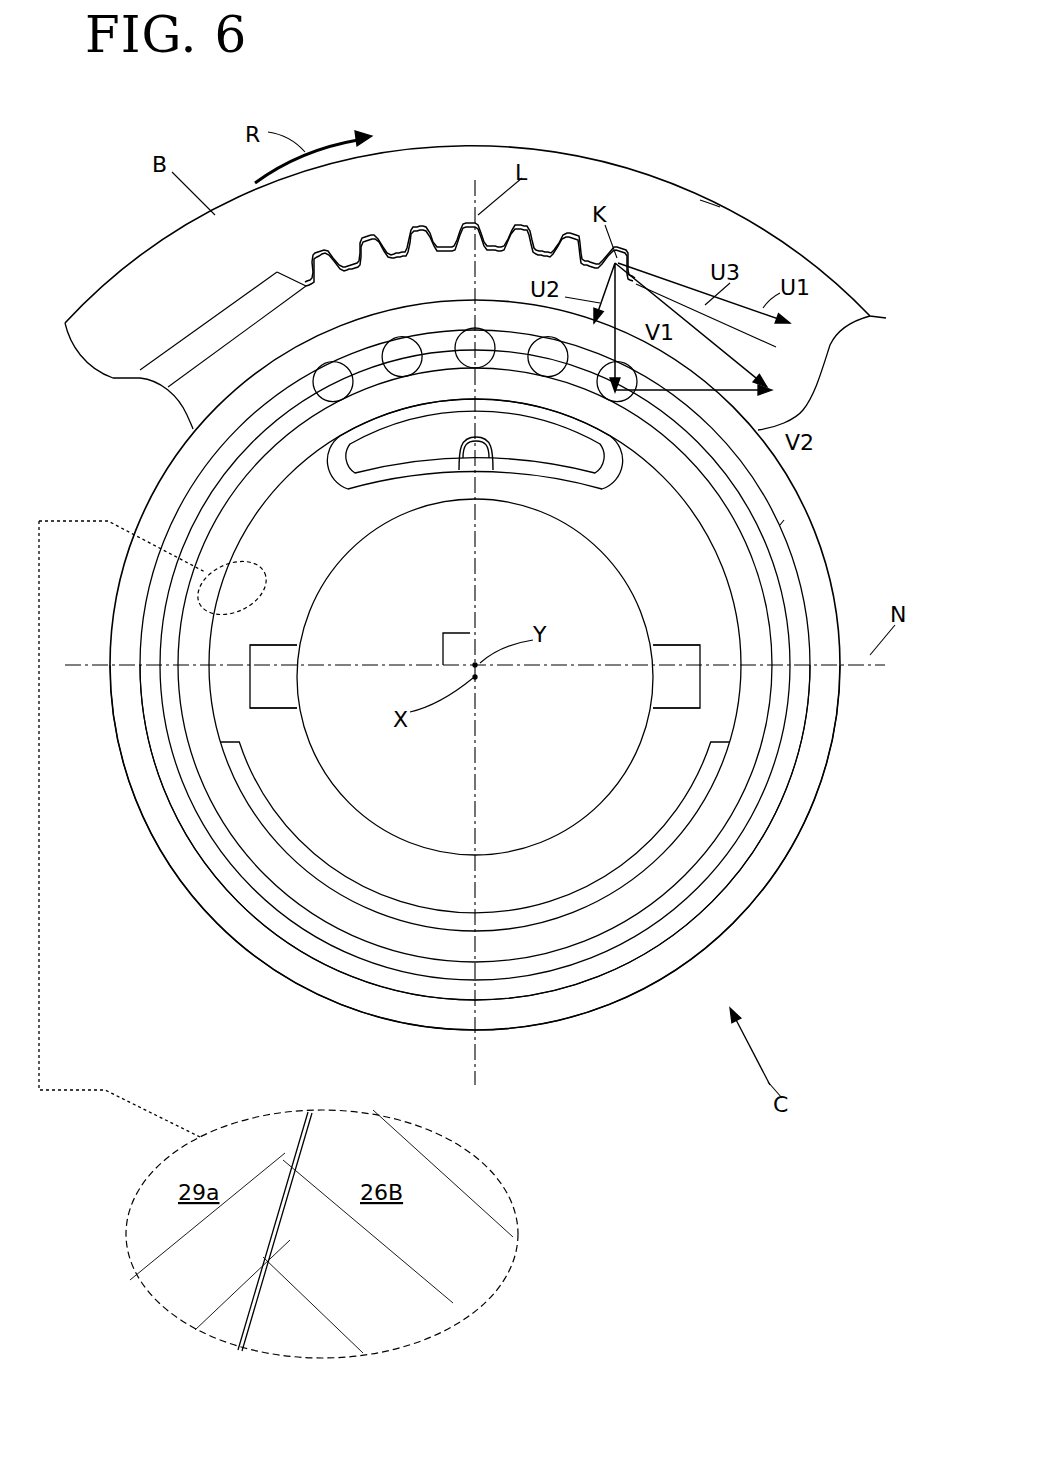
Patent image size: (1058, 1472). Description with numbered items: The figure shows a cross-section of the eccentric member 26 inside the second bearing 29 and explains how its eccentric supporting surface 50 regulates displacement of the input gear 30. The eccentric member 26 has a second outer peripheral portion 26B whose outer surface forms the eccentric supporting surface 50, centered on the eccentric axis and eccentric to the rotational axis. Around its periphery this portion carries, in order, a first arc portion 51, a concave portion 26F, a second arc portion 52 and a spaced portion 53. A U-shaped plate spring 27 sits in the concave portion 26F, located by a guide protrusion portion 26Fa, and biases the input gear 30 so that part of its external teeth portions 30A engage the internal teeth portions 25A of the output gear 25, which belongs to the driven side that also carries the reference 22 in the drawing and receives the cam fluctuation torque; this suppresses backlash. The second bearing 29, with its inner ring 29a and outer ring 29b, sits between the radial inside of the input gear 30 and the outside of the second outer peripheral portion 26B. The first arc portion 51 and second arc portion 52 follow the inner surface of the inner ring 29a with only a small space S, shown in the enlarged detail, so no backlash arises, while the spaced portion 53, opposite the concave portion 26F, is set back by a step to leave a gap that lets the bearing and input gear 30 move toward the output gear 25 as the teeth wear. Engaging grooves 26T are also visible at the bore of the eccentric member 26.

The output gear 25 is at (703, 205).
The pulley 22 is at (710, 203).
The internal teeth portions 25A is at (330, 256).
The input gear 30 is at (265, 333).
The external teeth portions 30A is at (408, 246).
The plate spring 27 is at (413, 370).
The eccentric supporting surface 50 is at (210, 450).
The first arc portion 51 is at (207, 620).
The second arc portion 52 is at (795, 702).
The spaced portion 53 is at (520, 913).
The second bearing 29 is at (232, 1003).
The inner ring 29a is at (340, 1003).
The outer ring 29b is at (335, 985).
The second outer peripheral portion 26B is at (790, 515).
The eccentric member 26 is at (782, 522).
The engagement groove 26T is at (268, 707).
The concave portion 26F is at (540, 490).
The guide protrusion portion 26Fa is at (450, 462).
The small space S is at (277, 1223).